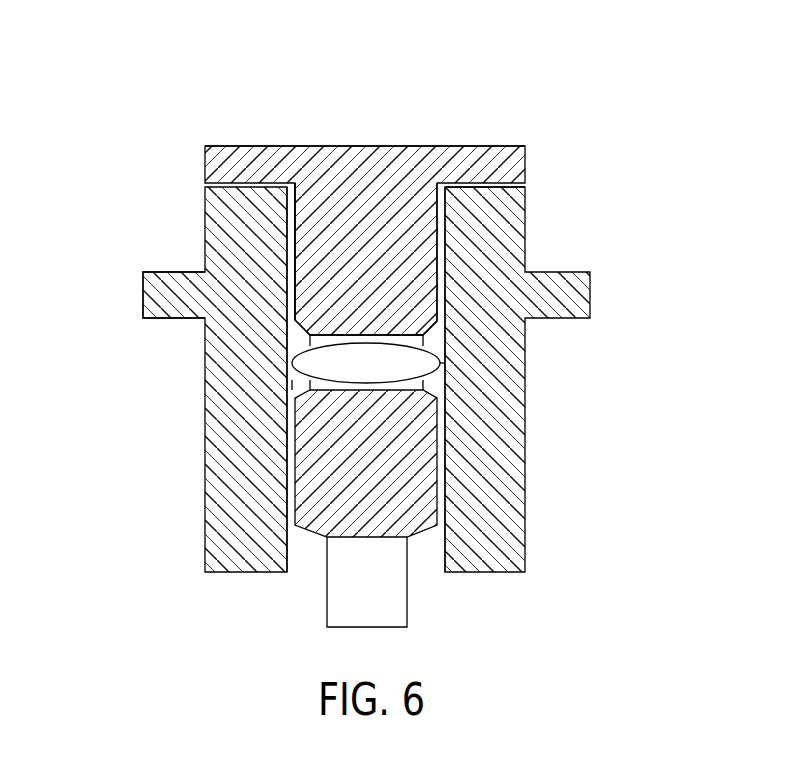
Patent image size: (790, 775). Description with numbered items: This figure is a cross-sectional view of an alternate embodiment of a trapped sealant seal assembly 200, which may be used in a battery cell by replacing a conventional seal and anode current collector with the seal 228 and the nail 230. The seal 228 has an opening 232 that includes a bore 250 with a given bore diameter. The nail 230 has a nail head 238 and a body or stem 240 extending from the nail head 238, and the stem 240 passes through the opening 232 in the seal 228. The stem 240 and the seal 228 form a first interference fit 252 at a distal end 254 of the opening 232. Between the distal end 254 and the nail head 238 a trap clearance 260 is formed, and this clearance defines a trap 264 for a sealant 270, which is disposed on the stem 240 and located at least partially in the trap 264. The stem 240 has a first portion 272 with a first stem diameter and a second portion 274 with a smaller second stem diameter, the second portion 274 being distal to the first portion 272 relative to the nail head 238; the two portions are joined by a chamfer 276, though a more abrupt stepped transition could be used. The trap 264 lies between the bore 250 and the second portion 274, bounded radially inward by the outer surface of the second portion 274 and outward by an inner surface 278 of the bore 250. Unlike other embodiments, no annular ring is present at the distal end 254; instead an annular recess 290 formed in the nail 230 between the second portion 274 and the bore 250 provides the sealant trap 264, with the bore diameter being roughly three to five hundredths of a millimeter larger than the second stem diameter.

The seal assembly 200 is at (255, 103).
The seal 228 is at (218, 357).
The nail 230 is at (218, 171).
The opening 232 is at (452, 210).
The nail head 238 is at (505, 164).
The stem 240 is at (410, 238).
The bore 250 is at (445, 264).
The first interference fit 252 is at (292, 443).
The distal end 254 is at (579, 545).
The trap clearance 260 is at (298, 338).
The trap 264 is at (413, 363).
The sealant 270 is at (443, 367).
The first portion 272 is at (317, 229).
The second portion 274 is at (413, 342).
The chamfer 276 is at (436, 335).
The inner surface 278 is at (292, 268).
The annular recess 290 is at (293, 385).